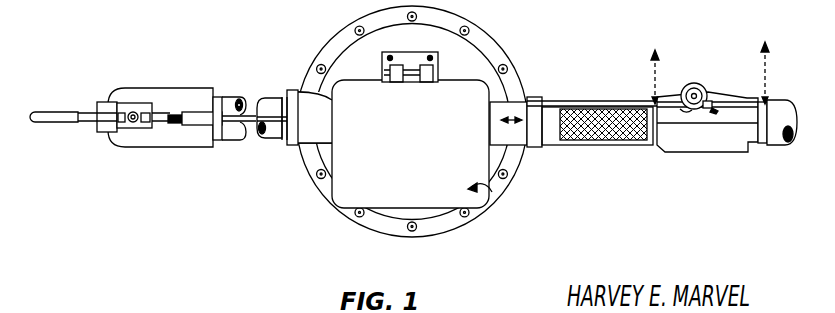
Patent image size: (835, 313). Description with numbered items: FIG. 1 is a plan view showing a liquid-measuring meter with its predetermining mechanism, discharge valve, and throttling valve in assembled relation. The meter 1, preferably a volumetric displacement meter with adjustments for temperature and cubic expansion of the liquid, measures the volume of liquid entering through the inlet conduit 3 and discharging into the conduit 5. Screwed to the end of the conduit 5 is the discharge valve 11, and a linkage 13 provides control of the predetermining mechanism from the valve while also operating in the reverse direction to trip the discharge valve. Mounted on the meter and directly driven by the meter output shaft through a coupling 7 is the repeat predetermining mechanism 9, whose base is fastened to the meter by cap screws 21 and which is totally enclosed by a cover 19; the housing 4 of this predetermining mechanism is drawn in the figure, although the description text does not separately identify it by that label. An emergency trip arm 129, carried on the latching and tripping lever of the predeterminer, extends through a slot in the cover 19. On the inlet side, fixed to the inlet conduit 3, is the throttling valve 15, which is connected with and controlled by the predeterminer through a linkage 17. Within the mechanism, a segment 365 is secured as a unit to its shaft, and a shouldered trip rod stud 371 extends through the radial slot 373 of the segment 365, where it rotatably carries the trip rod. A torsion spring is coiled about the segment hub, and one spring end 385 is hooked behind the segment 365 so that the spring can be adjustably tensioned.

The meter 1 is at (449, 221).
The conduit 3 is at (778, 107).
The housing 4 is at (345, 196).
The conduit 5 is at (230, 102).
The coupling 7 is at (711, 63).
The repeat predetermining mechanism 9 is at (492, 192).
The discharge valve 11 is at (150, 93).
The linkage 13 is at (234, 136).
The throttling valve 15 is at (693, 145).
The linkage 17 is at (570, 103).
The cover 19 is at (467, 92).
The cap screws 21 is at (430, 57).
The emergency trip arm 129 is at (338, 132).
The segment 365 is at (690, 86).
The trip rod stud 371 is at (708, 110).
The radial slot 373 is at (707, 90).
The spring end 385 is at (688, 111).